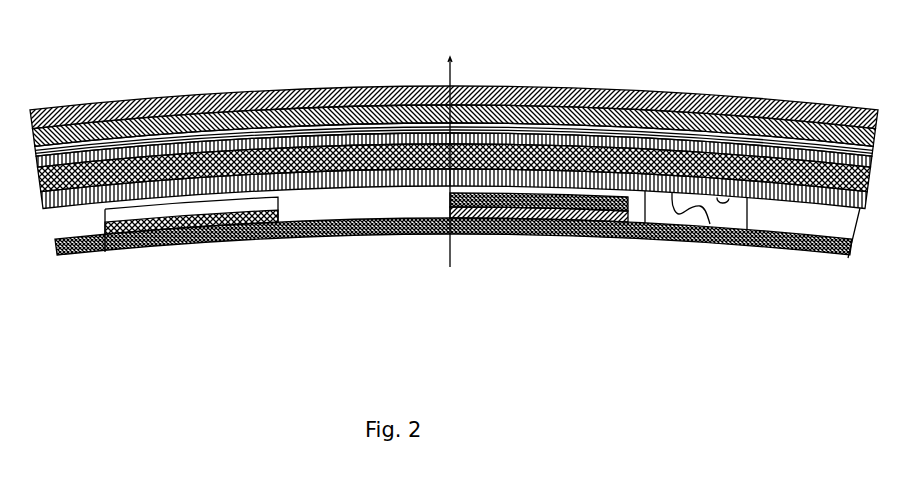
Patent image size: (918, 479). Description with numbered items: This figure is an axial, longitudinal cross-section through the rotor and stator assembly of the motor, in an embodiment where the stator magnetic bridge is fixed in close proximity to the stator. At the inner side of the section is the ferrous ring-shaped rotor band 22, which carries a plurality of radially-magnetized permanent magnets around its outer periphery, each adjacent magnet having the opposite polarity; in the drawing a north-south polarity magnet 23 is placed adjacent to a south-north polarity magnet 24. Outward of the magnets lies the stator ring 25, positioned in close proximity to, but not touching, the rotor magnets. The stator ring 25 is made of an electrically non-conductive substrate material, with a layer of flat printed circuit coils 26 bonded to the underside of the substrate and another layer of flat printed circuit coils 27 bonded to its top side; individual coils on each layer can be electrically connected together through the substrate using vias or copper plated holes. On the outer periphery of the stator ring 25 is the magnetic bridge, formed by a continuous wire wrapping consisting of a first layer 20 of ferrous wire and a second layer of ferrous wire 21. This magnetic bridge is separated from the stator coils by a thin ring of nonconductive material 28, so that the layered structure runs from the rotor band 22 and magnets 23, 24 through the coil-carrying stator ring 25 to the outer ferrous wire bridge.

The first layer of ferrous wire 20 is at (266, 127).
The second layer of ferrous wire 21 is at (200, 95).
The ferrous ring-shaped rotor band 22 is at (104, 245).
The north-south polarity magnet 23 is at (228, 232).
The south-north polarity magnet 24 is at (495, 215).
The stator ring 25 is at (715, 237).
The layer of flat printed circuit coils 26 is at (647, 240).
The layer of flat printed circuit coils 27 is at (755, 234).
The thin ring of nonconductive material 28 is at (405, 104).